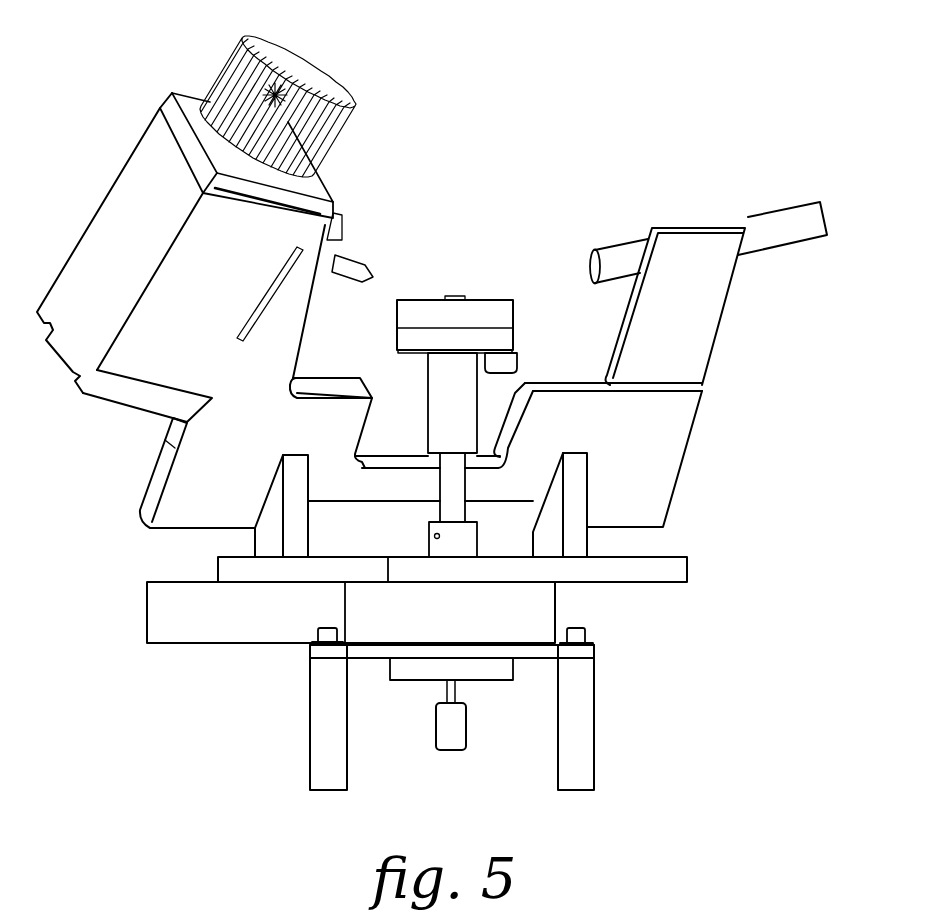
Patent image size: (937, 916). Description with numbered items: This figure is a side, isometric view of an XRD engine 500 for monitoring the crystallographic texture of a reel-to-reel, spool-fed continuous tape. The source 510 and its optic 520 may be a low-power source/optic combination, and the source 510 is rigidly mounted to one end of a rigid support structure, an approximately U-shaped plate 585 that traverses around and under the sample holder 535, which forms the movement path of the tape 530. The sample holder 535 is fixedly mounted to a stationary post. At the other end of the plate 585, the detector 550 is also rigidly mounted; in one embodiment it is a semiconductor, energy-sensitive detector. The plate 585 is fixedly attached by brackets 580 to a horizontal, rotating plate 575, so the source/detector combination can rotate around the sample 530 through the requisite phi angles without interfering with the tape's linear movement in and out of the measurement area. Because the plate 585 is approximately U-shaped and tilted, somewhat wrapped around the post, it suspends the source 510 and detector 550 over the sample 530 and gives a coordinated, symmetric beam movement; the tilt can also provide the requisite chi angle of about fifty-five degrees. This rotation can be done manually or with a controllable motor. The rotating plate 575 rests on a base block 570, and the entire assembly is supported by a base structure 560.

The optical assembly 500 is at (503, 184).
The source 510 is at (107, 237).
The optic 520 is at (340, 268).
The tape 530 is at (451, 297).
The sample holder 535 is at (503, 298).
The detector 550 is at (773, 215).
The base structure 560 is at (644, 733).
The base block 570 is at (560, 607).
The rotating plate 575 is at (688, 568).
The brackets 580 is at (272, 498).
The U-shaped plate 585 is at (697, 403).